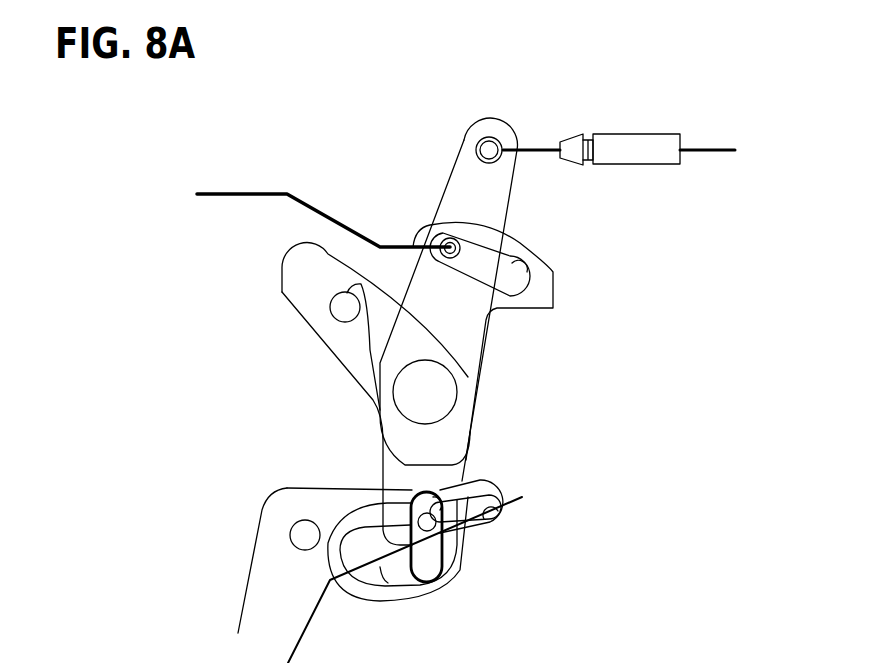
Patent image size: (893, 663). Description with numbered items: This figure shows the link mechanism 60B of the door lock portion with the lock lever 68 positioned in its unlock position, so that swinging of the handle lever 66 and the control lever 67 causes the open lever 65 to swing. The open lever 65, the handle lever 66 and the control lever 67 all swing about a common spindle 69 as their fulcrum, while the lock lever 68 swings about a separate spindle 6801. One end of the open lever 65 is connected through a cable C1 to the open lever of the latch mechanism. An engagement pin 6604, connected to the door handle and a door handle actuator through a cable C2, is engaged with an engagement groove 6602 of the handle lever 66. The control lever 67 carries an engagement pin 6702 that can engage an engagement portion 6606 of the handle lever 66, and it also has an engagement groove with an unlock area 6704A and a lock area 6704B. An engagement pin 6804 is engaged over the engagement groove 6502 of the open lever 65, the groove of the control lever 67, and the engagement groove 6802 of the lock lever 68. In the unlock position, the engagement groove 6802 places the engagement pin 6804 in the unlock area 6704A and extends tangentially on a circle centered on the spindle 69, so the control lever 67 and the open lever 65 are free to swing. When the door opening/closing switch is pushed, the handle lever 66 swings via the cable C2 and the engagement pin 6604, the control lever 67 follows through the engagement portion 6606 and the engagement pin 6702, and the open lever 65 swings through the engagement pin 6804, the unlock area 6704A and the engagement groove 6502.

The link mechanism 60B is at (298, 145).
The cable C2 is at (225, 193).
The cable C1 is at (715, 148).
The open lever 65 is at (469, 140).
The engagement groove 6502 is at (502, 494).
The engagement groove 6802 is at (510, 508).
The handle lever 66 is at (413, 247).
The engagement pin 6604 is at (452, 237).
The engagement groove 6602 is at (532, 273).
The control lever 67 is at (282, 255).
The engagement portion 6606 is at (330, 302).
The engagement pin 6702 is at (333, 322).
The spindle 69 is at (470, 392).
The lock lever 68 is at (332, 487).
The spindle 6801 is at (304, 551).
The engagement pin 6804 is at (447, 543).
The unlock area 6704A is at (440, 490).
The lock area 6704B is at (380, 570).